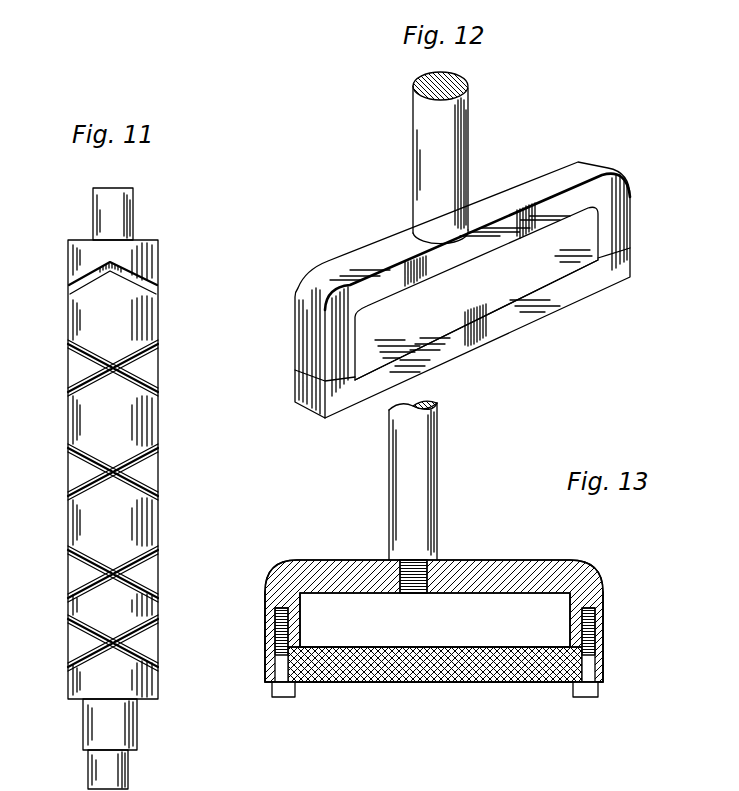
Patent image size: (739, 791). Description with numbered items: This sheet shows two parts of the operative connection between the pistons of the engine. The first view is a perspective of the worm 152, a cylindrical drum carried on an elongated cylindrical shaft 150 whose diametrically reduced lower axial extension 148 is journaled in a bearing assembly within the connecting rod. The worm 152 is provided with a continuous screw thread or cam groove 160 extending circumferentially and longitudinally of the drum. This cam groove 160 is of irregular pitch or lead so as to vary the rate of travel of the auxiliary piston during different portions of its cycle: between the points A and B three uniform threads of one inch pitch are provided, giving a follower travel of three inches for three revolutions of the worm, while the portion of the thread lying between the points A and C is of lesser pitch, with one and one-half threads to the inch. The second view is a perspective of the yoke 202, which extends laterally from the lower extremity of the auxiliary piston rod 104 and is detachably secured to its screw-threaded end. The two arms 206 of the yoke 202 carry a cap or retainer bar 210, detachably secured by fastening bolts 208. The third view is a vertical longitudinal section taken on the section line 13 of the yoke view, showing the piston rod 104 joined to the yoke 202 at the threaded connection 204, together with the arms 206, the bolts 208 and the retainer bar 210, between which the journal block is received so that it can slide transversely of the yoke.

In FIG. 12, the auxiliary piston rod 104 is at (430, 137).
In FIG. 13, the auxiliary piston rod 104 is at (417, 470).
In FIG. 11, the diametrically reduced lower axial extension 148 is at (115, 770).
In FIG. 11, the elongated cylindrical shaft 150 is at (115, 724).
In FIG. 11, the worm 152 is at (140, 677).
In FIG. 11, the cam groove 160 is at (73, 465).
In FIG. 12, the yoke 202 is at (503, 213).
In FIG. 13, the yoke 202 is at (500, 575).
In FIG. 13, the threaded stem of post 204 is at (412, 577).
In FIG. 12, the arms of the yoke 206 is at (303, 339).
In FIG. 13, the arms of the yoke 206 is at (273, 604).
In FIG. 13, the fastening bolts 208 is at (283, 688).
In FIG. 12, the retainer bar 210 is at (568, 290).
In FIG. 13, the retainer bar 210 is at (453, 658).
In FIG. 12, the section line 13- 13 is at (570, 167).
In FIG. 11, the point A is at (60, 573).
In FIG. 11, the point B is at (70, 288).
In FIG. 11, the point C is at (60, 645).